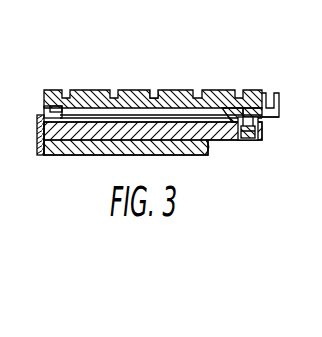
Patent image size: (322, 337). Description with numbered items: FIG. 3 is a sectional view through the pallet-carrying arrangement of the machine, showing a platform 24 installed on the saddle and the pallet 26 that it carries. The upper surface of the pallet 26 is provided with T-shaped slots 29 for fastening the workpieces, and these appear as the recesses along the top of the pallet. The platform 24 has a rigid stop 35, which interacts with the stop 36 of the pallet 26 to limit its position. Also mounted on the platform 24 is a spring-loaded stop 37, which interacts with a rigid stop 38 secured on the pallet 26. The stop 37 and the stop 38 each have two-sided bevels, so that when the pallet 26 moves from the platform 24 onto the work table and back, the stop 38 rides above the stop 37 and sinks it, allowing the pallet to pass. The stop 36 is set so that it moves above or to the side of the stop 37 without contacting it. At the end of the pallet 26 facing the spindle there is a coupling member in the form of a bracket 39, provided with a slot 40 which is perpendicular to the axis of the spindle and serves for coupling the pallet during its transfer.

The platform 24 is at (80, 128).
The pallet 26 is at (205, 104).
The T-shaped slots 29 is at (151, 92).
The rigid stop 35 is at (44, 107).
The stop 36 is at (59, 105).
The spring-loaded stop 37 is at (246, 141).
The rigid stop 38 is at (232, 118).
The bracket 39 is at (275, 116).
The slot 40 is at (267, 96).